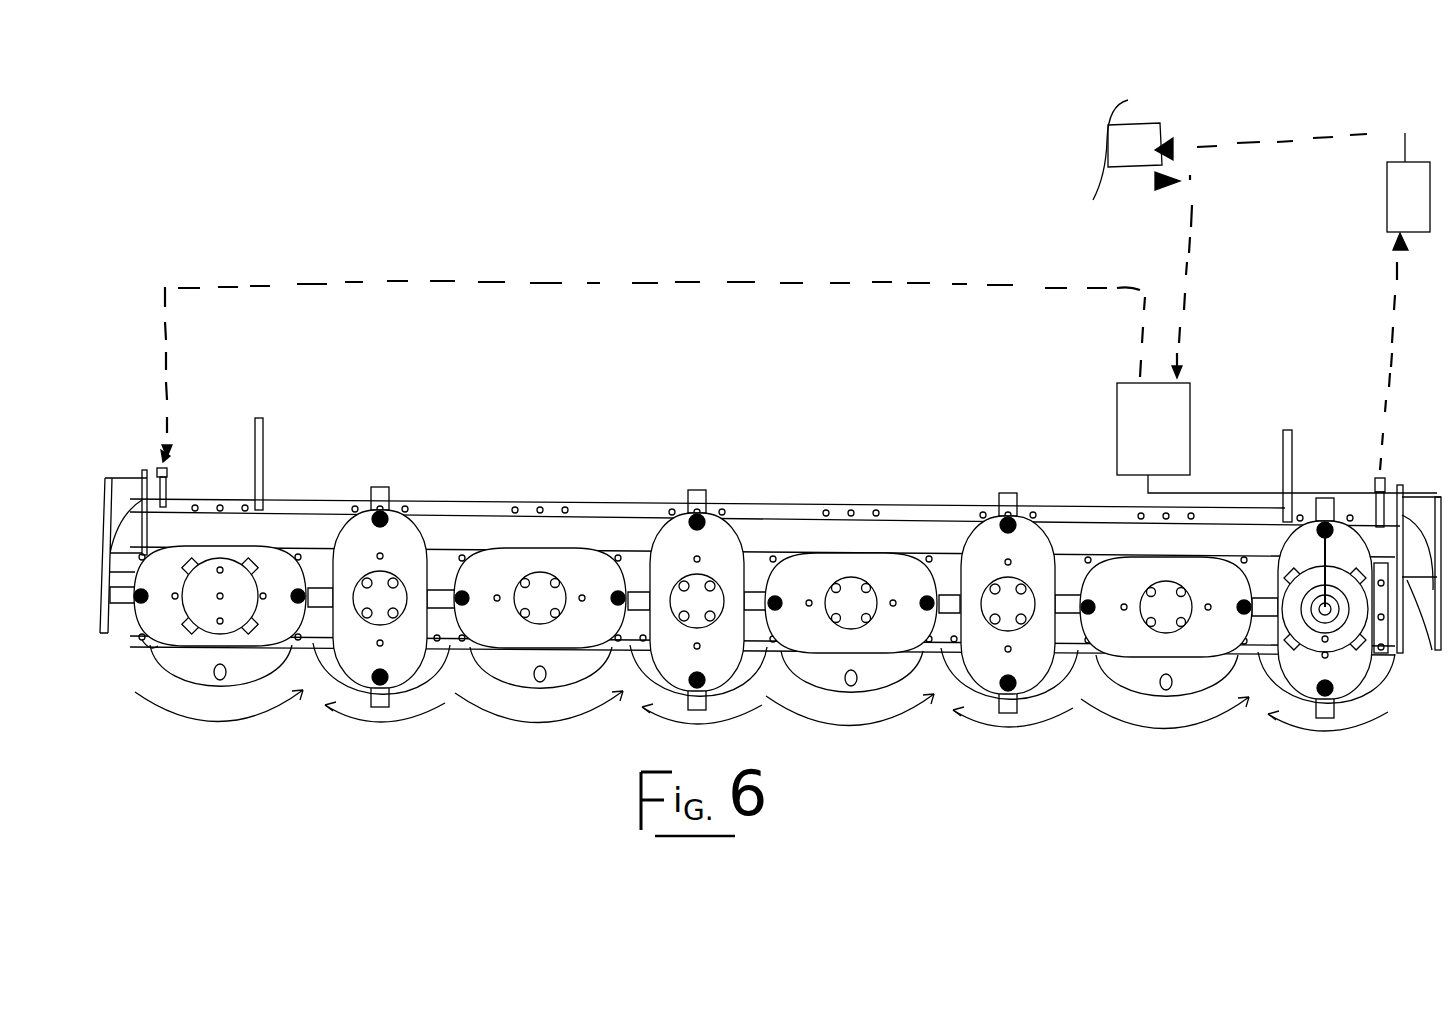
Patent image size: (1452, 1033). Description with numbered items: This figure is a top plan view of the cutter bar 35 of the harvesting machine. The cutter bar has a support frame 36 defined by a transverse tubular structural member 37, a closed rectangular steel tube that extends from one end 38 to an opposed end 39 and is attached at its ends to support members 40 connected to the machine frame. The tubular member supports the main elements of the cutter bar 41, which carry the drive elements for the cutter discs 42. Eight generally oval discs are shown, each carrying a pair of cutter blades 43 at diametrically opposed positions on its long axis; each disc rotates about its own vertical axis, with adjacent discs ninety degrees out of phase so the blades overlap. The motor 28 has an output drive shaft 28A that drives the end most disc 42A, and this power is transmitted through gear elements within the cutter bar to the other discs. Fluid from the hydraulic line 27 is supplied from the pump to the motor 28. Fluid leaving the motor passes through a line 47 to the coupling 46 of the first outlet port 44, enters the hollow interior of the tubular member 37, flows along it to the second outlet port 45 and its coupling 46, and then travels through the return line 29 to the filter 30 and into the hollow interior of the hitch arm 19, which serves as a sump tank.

The hitch arm 19 is at (1142, 125).
The hydraulic line 27 is at (1190, 262).
The motor 28 is at (1117, 402).
The output drive shaft 28A is at (1215, 492).
The return line 29 is at (1395, 270).
The filter 30 is at (1387, 196).
The cutter bar 35 is at (775, 464).
The support frame 36 is at (518, 528).
The transverse tubular structural member 37 is at (845, 536).
The one end 38 is at (187, 478).
The opposed end 39 is at (1365, 525).
The support members 40 is at (128, 522).
The cutter bar 41 is at (640, 568).
The cutter discs 42 is at (860, 642).
The end most disc 42A is at (1300, 665).
The cutter blades 43 is at (1008, 500).
The first outlet port 44 is at (165, 458).
The second outlet port 45 is at (1380, 477).
The coupling 46 is at (187, 478).
The line 47 is at (879, 283).